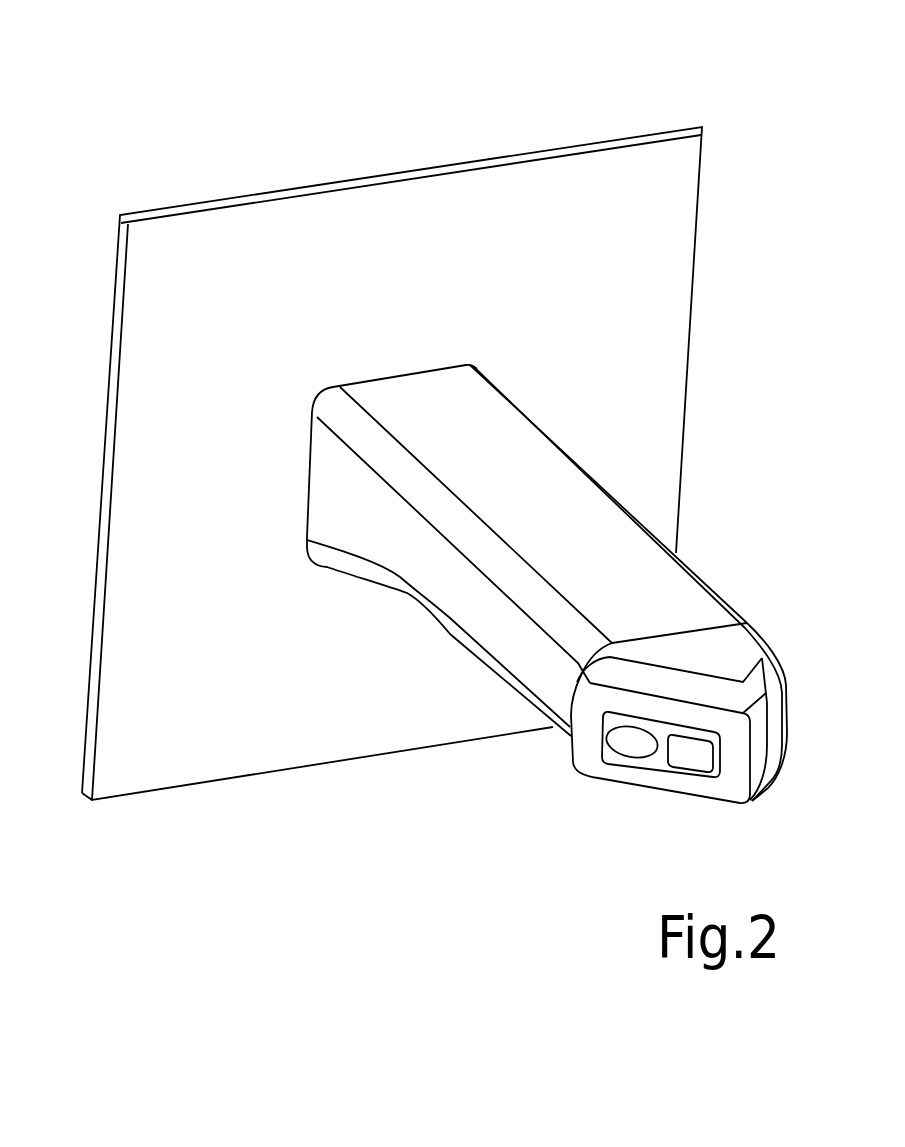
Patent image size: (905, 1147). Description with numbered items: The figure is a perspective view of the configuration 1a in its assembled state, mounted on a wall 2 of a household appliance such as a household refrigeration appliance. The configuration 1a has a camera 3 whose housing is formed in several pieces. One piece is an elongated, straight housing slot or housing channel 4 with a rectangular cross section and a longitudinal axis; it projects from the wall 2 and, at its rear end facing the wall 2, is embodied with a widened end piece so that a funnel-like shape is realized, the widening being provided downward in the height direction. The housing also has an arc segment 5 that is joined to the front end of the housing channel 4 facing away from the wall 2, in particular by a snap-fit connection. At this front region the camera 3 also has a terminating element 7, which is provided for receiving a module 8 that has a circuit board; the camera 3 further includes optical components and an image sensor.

The configuration 1a is at (325, 133).
The wall 2 is at (223, 247).
The camera 3 is at (495, 705).
The housing channel 4 is at (688, 603).
The arc segment 5 is at (740, 663).
The terminating element 7 is at (655, 773).
The module 8 is at (690, 753).